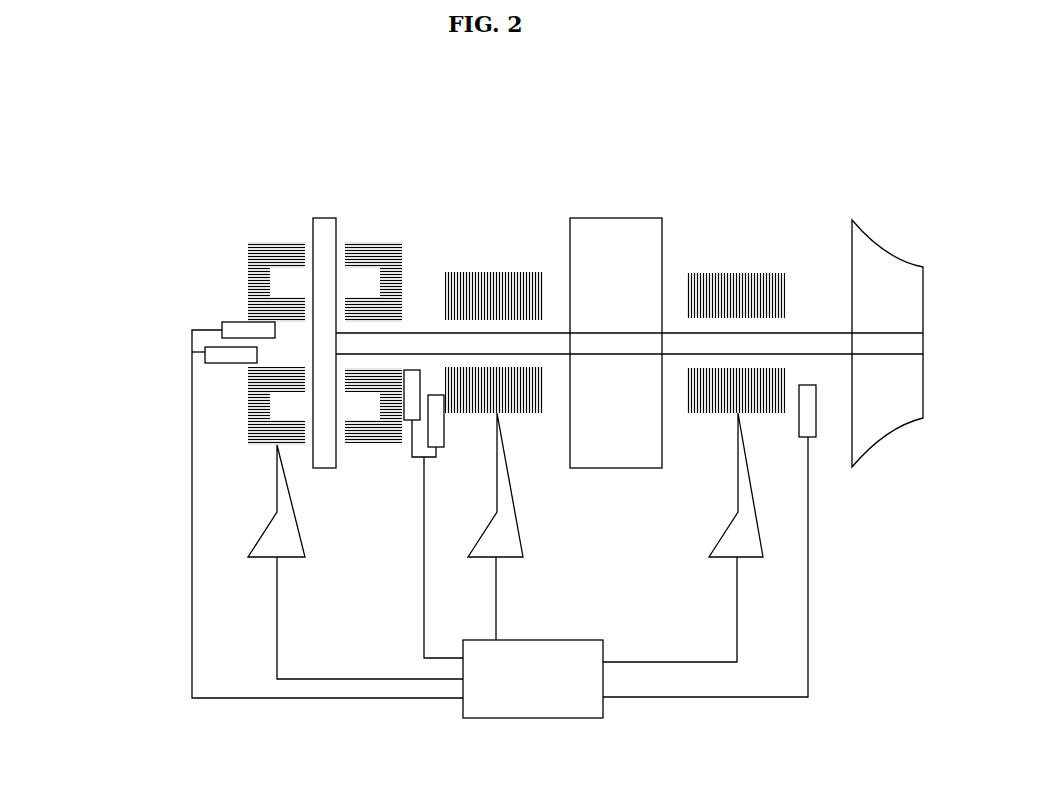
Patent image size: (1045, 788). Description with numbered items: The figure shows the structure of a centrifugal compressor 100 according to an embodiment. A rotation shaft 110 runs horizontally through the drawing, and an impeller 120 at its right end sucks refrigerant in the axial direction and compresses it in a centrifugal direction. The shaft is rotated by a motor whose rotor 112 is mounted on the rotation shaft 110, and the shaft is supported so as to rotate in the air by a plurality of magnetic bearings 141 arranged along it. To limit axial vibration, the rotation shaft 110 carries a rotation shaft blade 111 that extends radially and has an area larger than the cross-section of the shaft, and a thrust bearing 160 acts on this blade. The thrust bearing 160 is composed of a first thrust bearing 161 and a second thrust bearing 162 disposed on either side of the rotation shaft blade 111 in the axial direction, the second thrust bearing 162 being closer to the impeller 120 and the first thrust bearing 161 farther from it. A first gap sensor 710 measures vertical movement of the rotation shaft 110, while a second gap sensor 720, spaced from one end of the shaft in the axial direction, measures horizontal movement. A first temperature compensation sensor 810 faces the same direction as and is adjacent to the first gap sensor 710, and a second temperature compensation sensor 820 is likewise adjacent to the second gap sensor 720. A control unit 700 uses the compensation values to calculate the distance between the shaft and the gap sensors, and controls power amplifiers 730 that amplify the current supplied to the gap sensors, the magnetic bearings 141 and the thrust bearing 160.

The centrifugal compressor 100 is at (815, 98).
The rotation shaft 110 is at (425, 337).
The rotation shaft blade 111 is at (323, 230).
The rotor 112 is at (605, 257).
The impeller 120 is at (885, 268).
The magnetic bearing 141 is at (485, 277).
The thrust bearing 160 is at (212, 367).
The first thrust bearing 161 is at (255, 390).
The second thrust bearing 162 is at (368, 420).
The control unit 700 is at (545, 707).
The first gap sensor 710 is at (415, 418).
The second gap sensor 720 is at (240, 333).
The power amplifier 730 is at (283, 535).
The first temperature compensation sensor 810 is at (437, 420).
The second temperature compensation sensor 820 is at (203, 352).